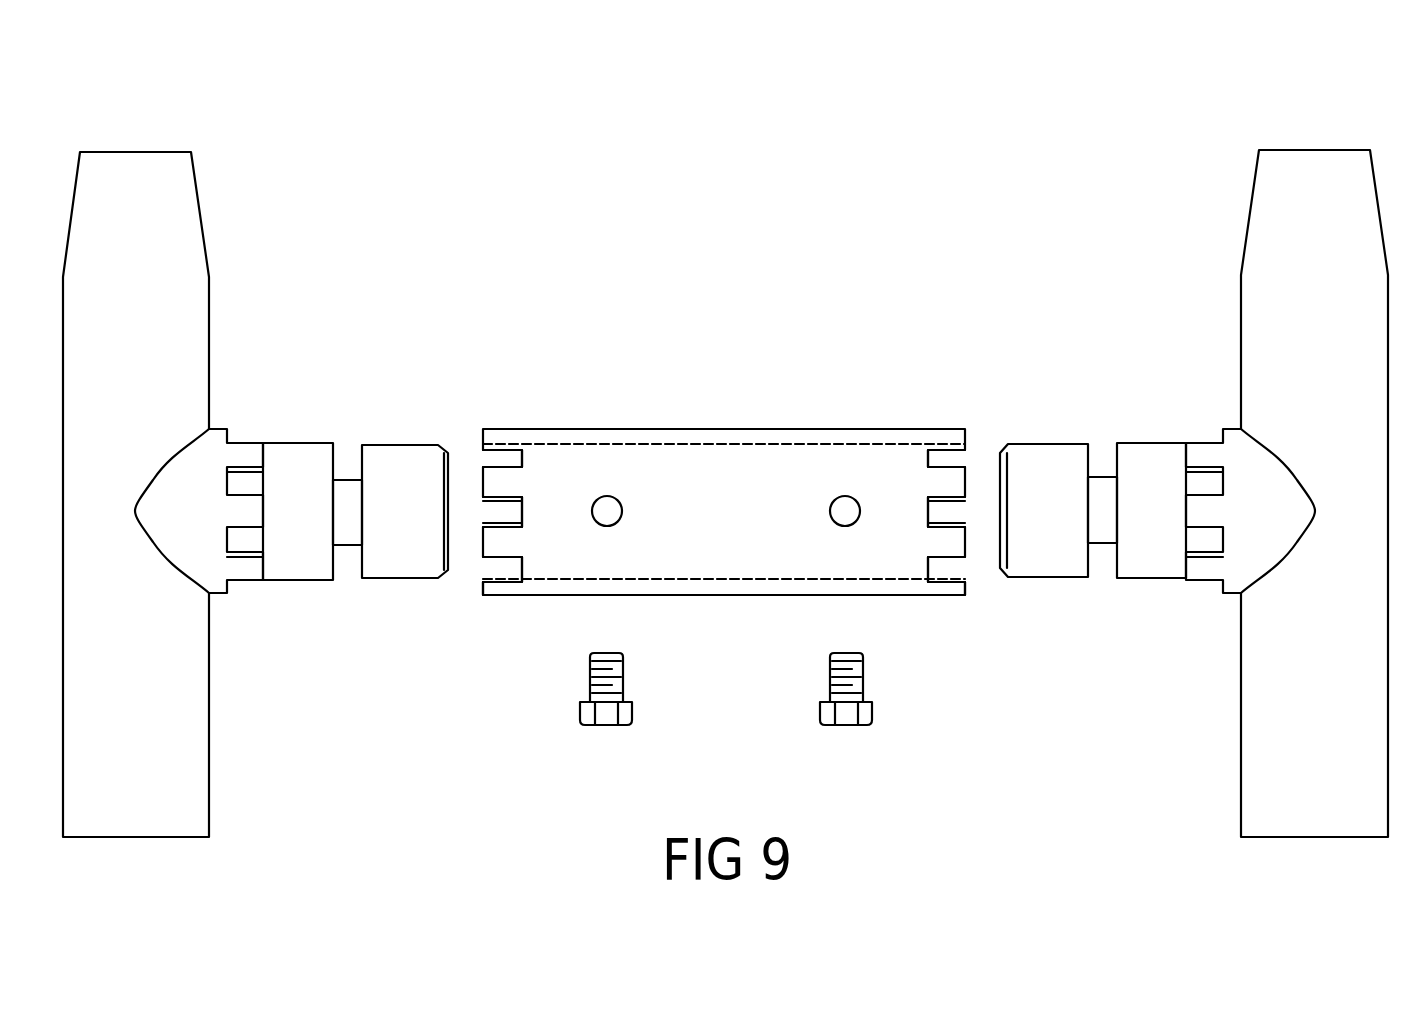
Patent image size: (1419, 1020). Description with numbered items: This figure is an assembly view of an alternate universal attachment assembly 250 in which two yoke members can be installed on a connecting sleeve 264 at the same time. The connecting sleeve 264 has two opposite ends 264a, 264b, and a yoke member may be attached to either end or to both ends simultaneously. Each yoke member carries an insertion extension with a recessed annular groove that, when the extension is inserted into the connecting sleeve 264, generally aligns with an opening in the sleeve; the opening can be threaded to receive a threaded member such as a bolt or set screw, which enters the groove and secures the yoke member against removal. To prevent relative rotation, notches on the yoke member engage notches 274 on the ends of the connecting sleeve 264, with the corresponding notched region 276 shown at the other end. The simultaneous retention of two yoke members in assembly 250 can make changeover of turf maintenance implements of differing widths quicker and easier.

The universal attachment assembly 250 is at (882, 128).
The connecting sleeve 264 is at (727, 509).
The end of connecting sleeve 264a is at (966, 588).
The end of connecting sleeve 264b is at (484, 591).
The notches 274 is at (497, 483).
The notched end portion 276 is at (948, 478).